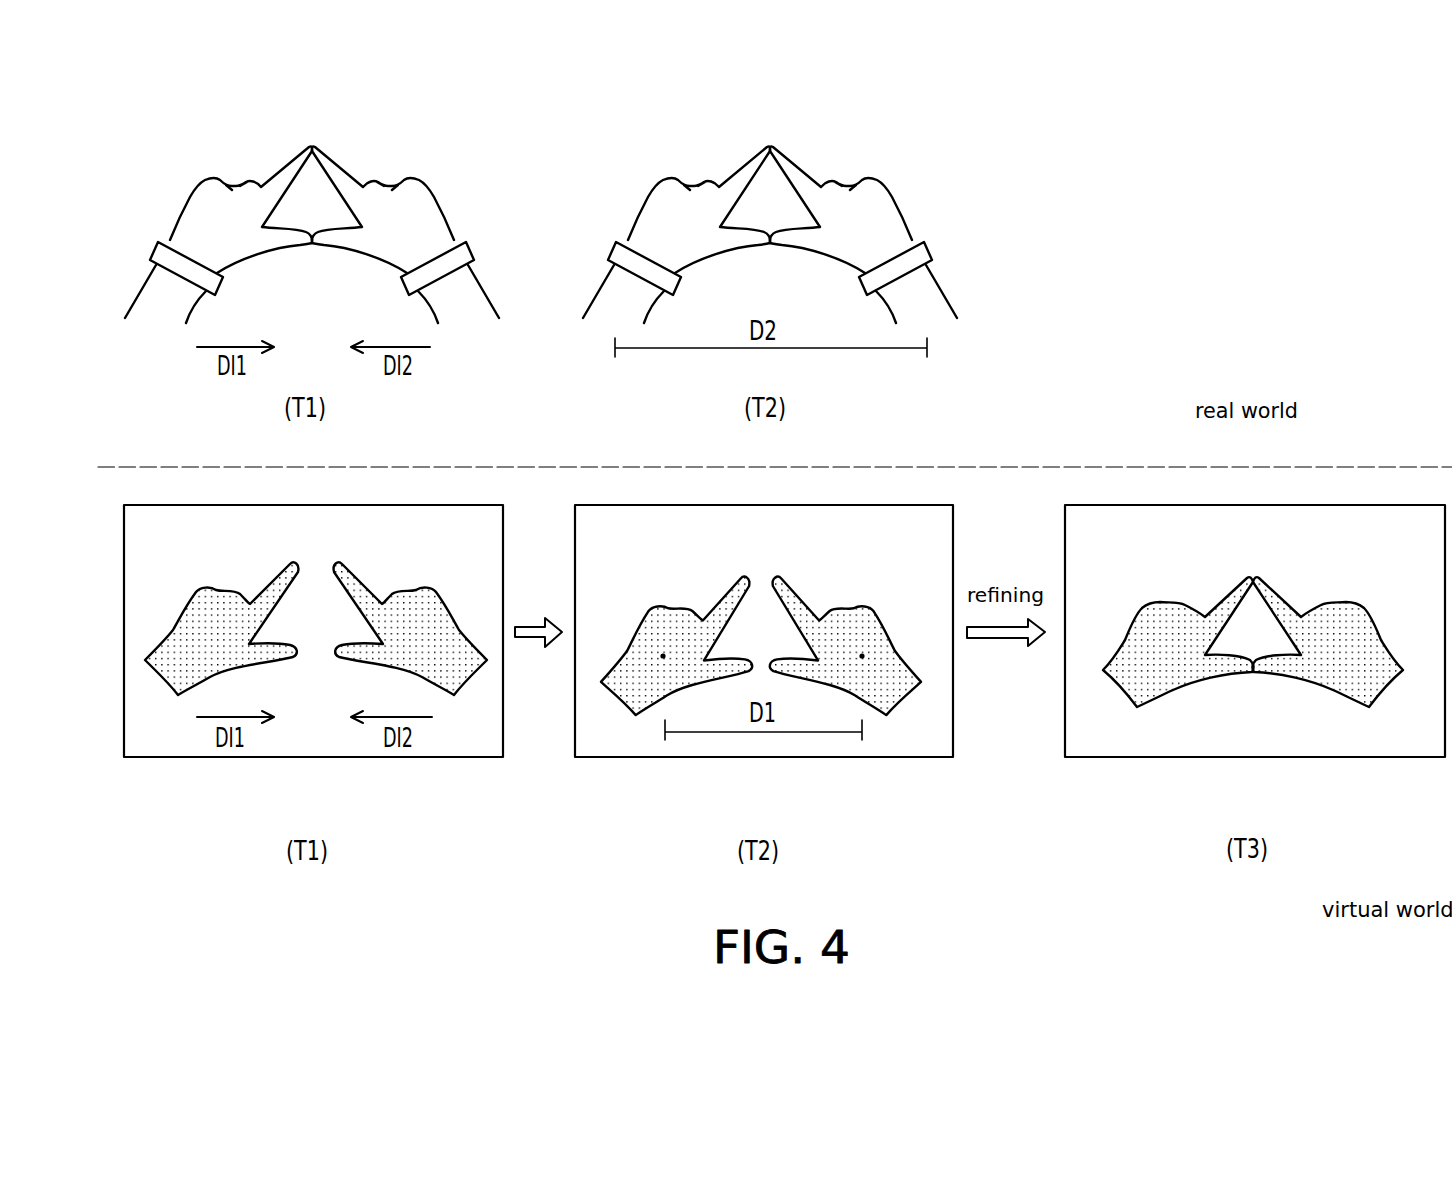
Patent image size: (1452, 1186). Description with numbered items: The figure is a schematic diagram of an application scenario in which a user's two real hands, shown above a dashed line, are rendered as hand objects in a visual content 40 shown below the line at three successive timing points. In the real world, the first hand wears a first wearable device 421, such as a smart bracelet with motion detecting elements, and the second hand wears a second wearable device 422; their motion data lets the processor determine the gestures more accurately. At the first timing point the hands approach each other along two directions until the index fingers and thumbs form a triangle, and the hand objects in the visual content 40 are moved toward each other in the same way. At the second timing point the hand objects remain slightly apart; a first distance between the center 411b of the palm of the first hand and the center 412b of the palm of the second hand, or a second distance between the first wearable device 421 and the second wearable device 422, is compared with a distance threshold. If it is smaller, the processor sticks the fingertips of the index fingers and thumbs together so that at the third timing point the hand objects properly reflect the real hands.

The visual content 40 is at (173, 734).
The first wearable device 421 is at (162, 253).
The second wearable device 422 is at (463, 253).
The center of the palm of the first hand 411b is at (663, 656).
The center of the palm of the second hand 412b is at (862, 656).